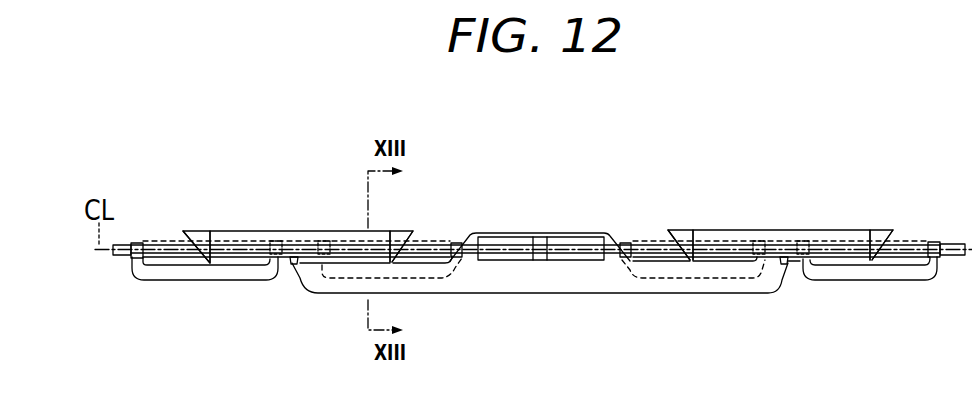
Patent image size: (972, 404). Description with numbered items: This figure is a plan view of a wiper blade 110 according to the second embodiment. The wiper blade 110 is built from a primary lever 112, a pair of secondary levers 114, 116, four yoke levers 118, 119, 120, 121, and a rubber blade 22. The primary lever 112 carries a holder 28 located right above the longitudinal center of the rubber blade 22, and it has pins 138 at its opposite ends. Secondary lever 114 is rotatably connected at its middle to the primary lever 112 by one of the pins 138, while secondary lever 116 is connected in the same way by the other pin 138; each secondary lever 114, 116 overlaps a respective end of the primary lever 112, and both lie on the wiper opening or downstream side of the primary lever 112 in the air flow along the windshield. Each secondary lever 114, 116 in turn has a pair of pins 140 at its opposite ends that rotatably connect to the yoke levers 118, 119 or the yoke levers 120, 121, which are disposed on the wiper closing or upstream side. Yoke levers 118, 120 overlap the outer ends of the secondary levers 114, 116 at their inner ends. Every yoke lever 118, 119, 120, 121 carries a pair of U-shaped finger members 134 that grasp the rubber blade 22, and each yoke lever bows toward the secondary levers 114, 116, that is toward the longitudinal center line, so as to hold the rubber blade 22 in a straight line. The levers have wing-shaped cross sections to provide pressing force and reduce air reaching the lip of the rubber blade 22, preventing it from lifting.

The rubber blade 22 is at (165, 245).
The holder 28 is at (554, 246).
The wiper blade 110 is at (561, 173).
The primary lever 112 is at (538, 295).
The secondary lever 114 is at (301, 230).
The secondary lever 116 is at (789, 230).
The yoke lever 118 is at (184, 283).
The yoke lever 119 is at (353, 283).
The yoke lever 120 is at (860, 283).
The yoke lever 121 is at (698, 283).
The U-shaped finger member 134 is at (139, 245).
The pin 138 is at (293, 266).
The pin 140 is at (214, 252).